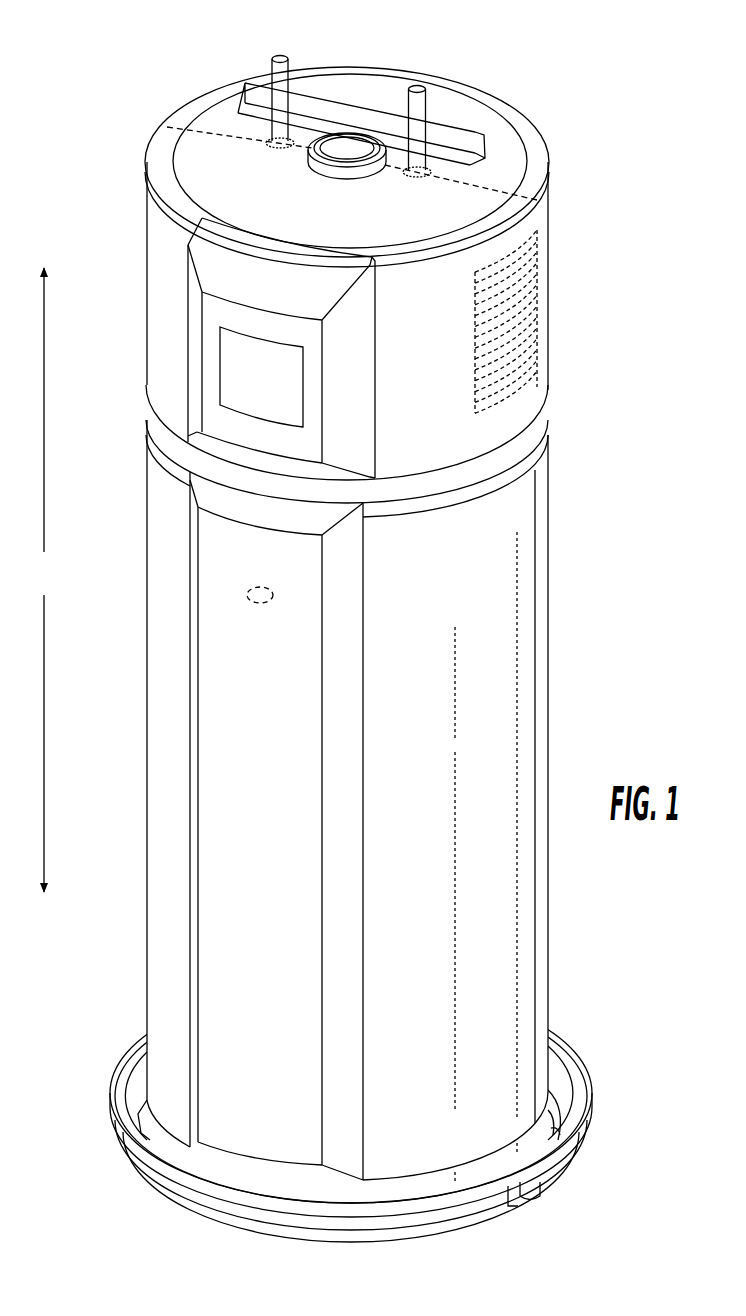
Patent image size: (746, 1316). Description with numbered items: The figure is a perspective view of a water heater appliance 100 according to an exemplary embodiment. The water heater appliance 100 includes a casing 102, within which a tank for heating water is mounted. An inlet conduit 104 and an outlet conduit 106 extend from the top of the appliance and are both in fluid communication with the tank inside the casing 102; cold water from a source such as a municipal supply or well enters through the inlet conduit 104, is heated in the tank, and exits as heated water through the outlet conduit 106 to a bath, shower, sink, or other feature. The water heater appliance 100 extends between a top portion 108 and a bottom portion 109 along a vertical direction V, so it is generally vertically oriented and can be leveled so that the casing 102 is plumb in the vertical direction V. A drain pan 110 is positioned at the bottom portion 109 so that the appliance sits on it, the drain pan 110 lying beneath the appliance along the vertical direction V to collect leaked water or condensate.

The water heater appliance 100 is at (592, 125).
The casing 102 is at (527, 573).
The inlet conduit 104 is at (273, 68).
The outlet conduit 106 is at (419, 107).
The top portion 108 is at (124, 154).
The bottom portion 109 is at (93, 1082).
The drain pan 110 is at (612, 1094).
The vertical direction V is at (44, 580).